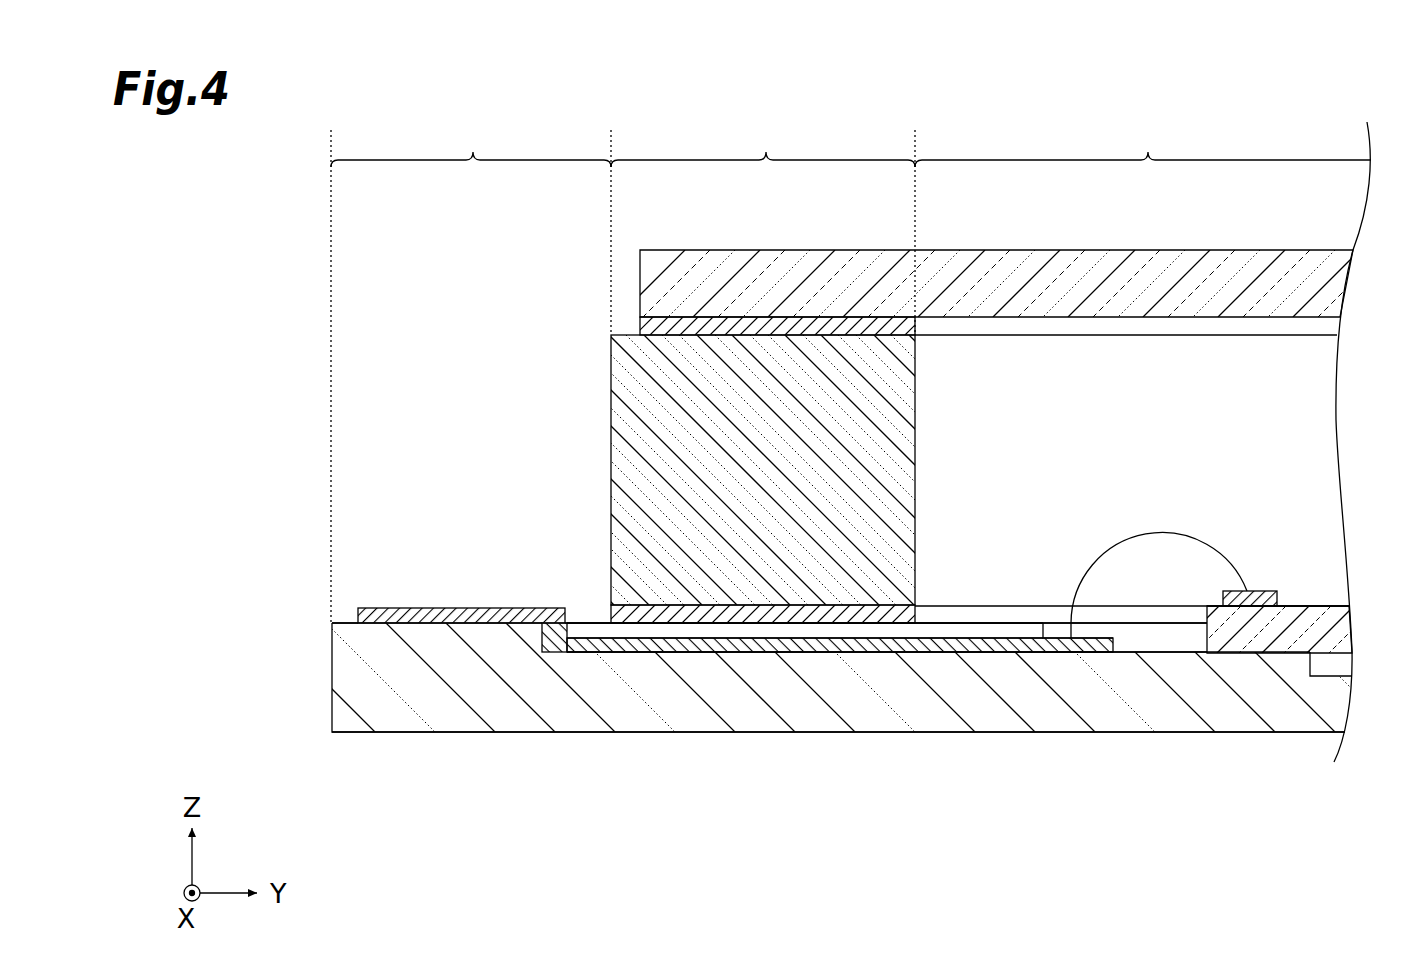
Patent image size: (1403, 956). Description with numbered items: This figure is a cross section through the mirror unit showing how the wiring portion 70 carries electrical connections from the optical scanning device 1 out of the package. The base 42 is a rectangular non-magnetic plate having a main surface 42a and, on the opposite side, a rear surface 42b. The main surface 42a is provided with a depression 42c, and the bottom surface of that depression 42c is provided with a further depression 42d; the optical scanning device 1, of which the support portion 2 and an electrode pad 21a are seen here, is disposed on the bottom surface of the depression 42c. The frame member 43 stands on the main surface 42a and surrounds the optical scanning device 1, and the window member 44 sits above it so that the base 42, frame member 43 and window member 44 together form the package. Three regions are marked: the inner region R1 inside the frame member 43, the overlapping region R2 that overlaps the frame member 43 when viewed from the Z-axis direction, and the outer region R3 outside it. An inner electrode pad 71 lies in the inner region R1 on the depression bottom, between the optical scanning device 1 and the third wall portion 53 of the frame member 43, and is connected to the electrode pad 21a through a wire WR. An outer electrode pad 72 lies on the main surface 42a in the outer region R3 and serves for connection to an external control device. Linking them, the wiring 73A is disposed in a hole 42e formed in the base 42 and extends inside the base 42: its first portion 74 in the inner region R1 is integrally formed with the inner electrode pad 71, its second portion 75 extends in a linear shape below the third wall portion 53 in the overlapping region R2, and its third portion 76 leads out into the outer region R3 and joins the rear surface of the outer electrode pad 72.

The optical scanning device 1 is at (1328, 596).
The support portion 2 is at (1252, 653).
The electrode pad 21a is at (1262, 591).
The base 42 is at (345, 678).
The main surface 42a is at (495, 608).
The rear surface 42b is at (345, 733).
The depression 42c is at (1058, 622).
The depression 42d is at (1322, 668).
The hole 42e is at (965, 655).
The frame member 43 is at (611, 472).
The window member 44 is at (1040, 250).
The third wall portion 53 is at (640, 420).
The wiring portion 70 is at (880, 656).
The inner electrode pad 71 is at (1100, 650).
The outer electrode pad 72 is at (405, 608).
The wiring 73A is at (665, 653).
The first portion 74 is at (1025, 653).
The second portion 75 is at (793, 632).
The third portion 76 is at (570, 655).
The wire WR is at (1118, 543).
The inner region R1 is at (1143, 230).
The overlapping region R2 is at (763, 230).
The outer region R3 is at (471, 374).